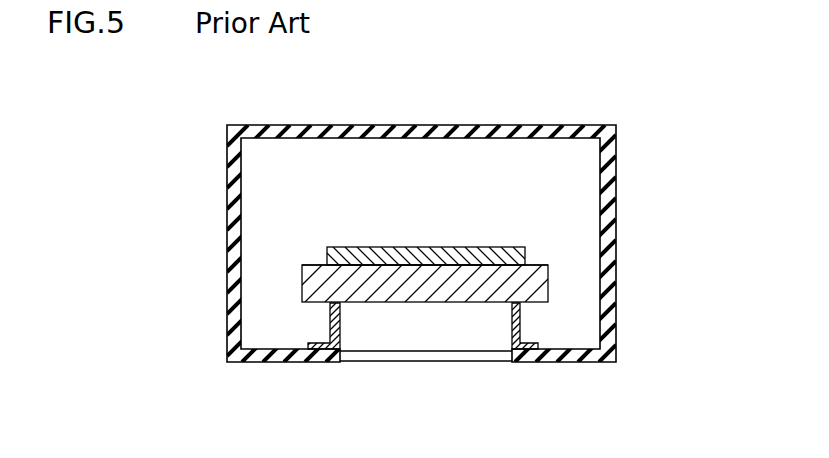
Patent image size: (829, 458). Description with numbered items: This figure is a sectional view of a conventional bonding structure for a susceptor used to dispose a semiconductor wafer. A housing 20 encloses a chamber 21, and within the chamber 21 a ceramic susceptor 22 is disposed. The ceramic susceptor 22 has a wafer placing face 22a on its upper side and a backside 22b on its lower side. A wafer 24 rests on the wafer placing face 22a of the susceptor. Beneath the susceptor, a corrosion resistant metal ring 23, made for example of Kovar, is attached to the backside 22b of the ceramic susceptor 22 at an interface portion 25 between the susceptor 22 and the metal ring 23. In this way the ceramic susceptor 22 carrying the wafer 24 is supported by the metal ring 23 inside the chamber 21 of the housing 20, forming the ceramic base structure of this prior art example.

The housing 20 is at (459, 206).
The chamber 21 is at (610, 197).
The ceramic susceptor 22 is at (557, 287).
The wafer placing face 22a is at (535, 262).
The backside 22b is at (385, 303).
The corrosion resistant metal ring 23 is at (526, 320).
The wafer 24 is at (363, 253).
The interface portion 25 is at (331, 304).